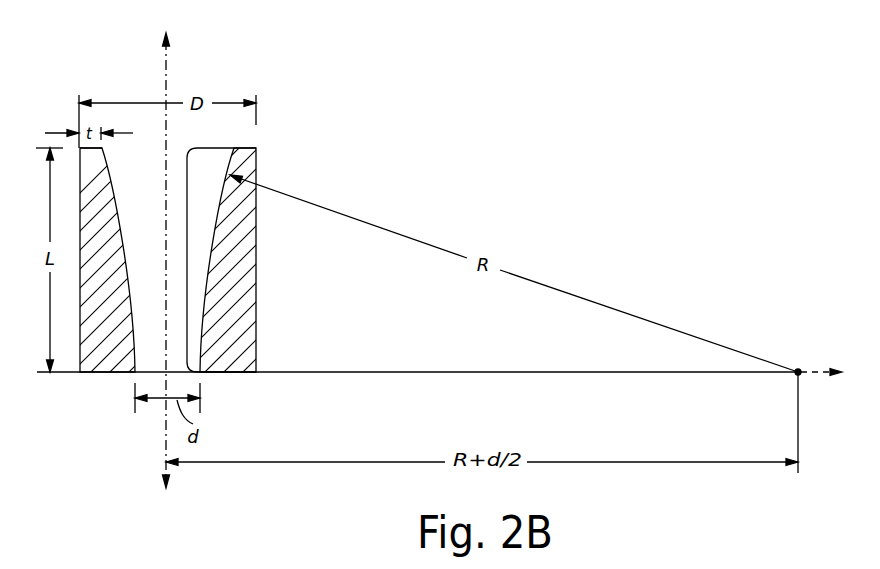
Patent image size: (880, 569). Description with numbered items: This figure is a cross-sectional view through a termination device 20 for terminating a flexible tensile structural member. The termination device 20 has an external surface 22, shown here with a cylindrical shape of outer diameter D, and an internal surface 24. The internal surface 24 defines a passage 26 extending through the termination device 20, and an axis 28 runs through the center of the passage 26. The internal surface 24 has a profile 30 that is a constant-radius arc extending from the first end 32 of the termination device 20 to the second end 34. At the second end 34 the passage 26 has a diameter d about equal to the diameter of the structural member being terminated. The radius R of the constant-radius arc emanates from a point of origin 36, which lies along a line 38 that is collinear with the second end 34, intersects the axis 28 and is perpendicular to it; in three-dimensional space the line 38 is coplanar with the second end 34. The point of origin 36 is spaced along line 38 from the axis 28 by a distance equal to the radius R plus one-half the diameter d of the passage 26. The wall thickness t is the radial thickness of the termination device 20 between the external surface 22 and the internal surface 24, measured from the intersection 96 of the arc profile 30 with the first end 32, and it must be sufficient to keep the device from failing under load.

The termination device 20 is at (303, 171).
The external surface 22 is at (256, 270).
The internal surface 24 is at (118, 212).
The passage 26 is at (177, 156).
The axis 28 is at (165, 85).
The profile 30 is at (187, 213).
The first end 32 is at (238, 149).
The second end 34 is at (230, 373).
The point of origin 36 is at (797, 370).
The line 38 is at (573, 373).
The intersection 96 is at (102, 149).